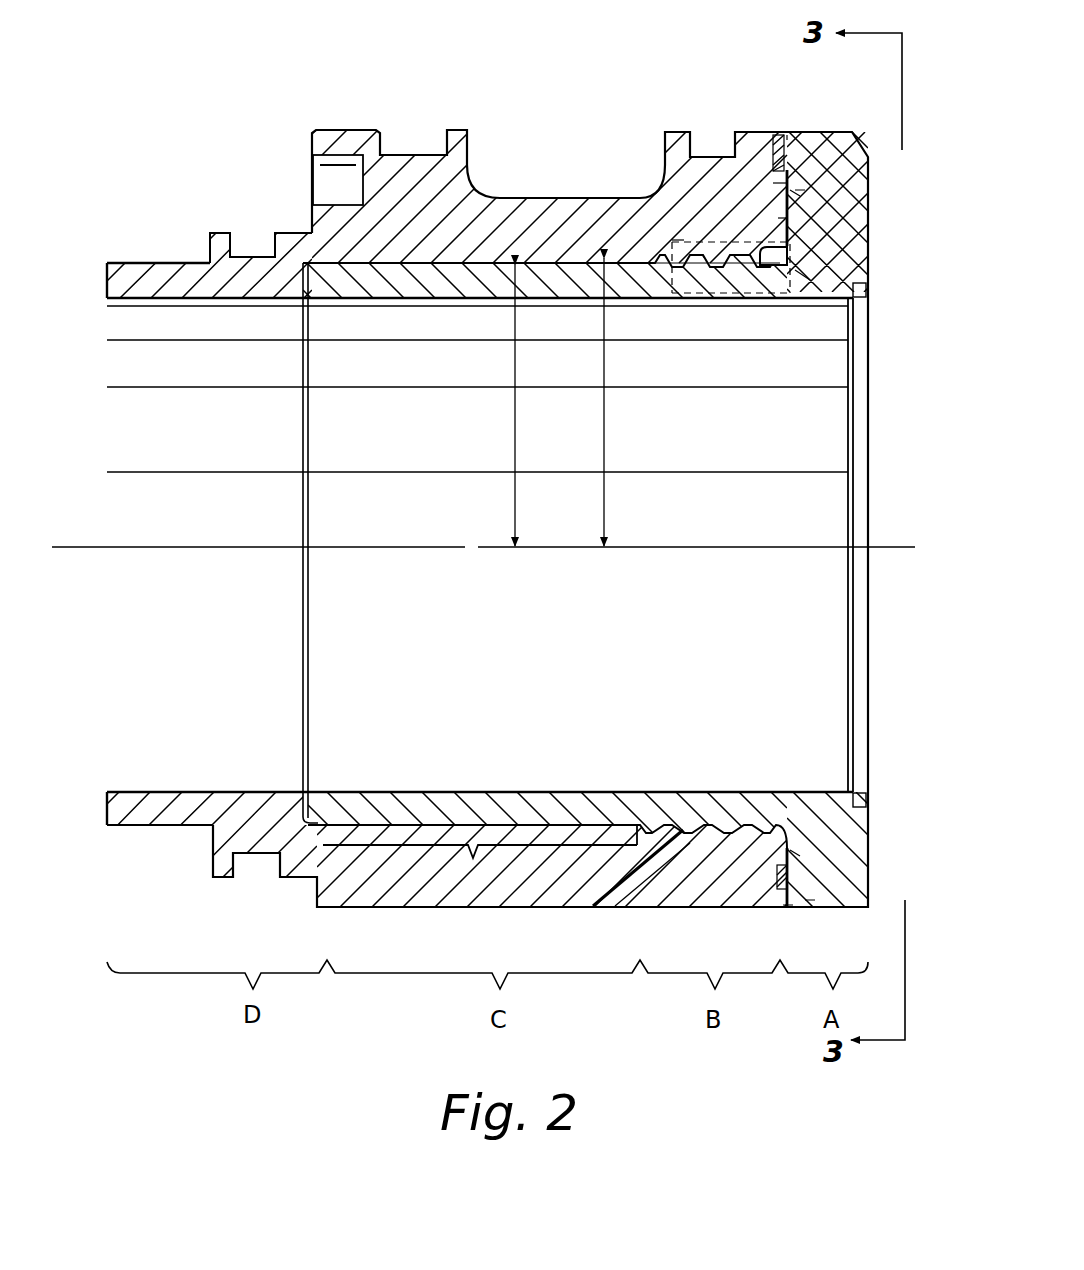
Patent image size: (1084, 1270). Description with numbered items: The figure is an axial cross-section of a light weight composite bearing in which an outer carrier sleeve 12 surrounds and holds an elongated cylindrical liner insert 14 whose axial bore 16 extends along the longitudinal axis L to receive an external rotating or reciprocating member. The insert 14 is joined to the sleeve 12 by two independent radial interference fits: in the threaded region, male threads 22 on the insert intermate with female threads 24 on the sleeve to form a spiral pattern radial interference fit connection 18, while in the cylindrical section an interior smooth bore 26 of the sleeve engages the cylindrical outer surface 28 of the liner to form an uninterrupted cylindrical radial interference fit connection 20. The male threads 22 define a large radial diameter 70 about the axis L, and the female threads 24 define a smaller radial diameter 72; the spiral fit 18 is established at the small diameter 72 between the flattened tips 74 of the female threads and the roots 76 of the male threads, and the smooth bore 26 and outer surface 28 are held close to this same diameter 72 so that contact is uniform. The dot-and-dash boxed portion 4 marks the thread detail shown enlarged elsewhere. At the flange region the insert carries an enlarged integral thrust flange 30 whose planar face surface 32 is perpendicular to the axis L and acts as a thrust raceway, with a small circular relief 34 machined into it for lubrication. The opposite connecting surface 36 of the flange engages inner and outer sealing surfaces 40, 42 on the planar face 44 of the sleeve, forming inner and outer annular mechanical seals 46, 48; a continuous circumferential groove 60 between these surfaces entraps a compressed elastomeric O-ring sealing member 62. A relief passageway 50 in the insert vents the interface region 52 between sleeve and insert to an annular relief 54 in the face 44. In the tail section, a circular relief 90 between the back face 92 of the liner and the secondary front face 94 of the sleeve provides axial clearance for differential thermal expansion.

The thread interface 4 is at (680, 238).
The outer carrier sleeve 12 is at (425, 220).
The liner insert 14 is at (432, 420).
The axial bore 16 is at (830, 420).
The spiral pattern radial interference fit connection 18 is at (677, 859).
The cylindrical radial interference fit connection 20 is at (480, 870).
The male threads 22 is at (645, 884).
The female threads 24 is at (730, 828).
The interior smooth bore 26 is at (358, 825).
The cylindrical outer surface 28 is at (541, 262).
The flange 30 is at (834, 245).
The face surface 32 is at (872, 205).
The relief 34 is at (862, 291).
The connecting surface 36 is at (778, 218).
The inner sealing surface 40 is at (789, 137).
The outer sealing surface 42 is at (790, 183).
The planar face 44 is at (797, 190).
The inner seal 46 is at (797, 193).
The outer seal 48 is at (785, 132).
The relief passageway 50 is at (803, 278).
The interface region 52 is at (805, 300).
The annular relief 54 is at (678, 238).
The circumferential groove 60 is at (772, 183).
The elastomeric sealing member 62 is at (776, 150).
The large radial diameter 70 is at (604, 375).
The small radial diameter 72 is at (515, 372).
The flattened tips 74 is at (660, 828).
The roots 76 is at (586, 911).
The circular relief 90 is at (303, 260).
The back face 92 is at (301, 264).
The secondary front face 94 is at (303, 276).
The longitudinal axis L is at (80, 545).